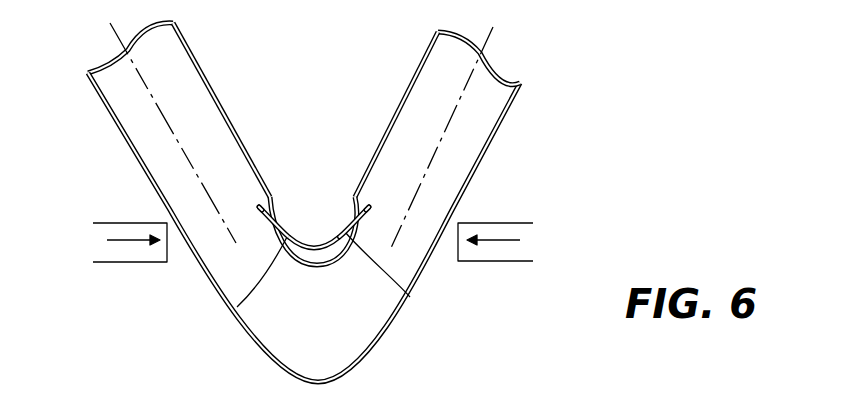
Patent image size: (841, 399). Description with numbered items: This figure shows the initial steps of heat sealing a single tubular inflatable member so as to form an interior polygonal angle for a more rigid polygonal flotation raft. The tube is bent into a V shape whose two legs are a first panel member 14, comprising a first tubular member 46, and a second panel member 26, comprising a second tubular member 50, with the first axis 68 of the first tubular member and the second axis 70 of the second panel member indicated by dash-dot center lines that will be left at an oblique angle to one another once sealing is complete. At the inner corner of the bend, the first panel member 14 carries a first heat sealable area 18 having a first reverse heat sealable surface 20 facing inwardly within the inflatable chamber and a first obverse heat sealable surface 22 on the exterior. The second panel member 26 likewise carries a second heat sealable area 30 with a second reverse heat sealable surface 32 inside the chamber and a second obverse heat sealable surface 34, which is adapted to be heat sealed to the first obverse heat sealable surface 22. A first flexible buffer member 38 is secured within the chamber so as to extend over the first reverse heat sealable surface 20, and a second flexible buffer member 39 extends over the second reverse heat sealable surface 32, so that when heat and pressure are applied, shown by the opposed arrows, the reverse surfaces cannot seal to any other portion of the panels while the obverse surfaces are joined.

The first panel member 14 is at (417, 92).
The first heat sealable area 18 is at (352, 205).
The first reverse heat sealable surface 20 is at (410, 297).
The first obverse heat sealable surface 22 is at (330, 234).
The second panel member 26 is at (205, 78).
The second heat sealable area 30 is at (280, 217).
The second reverse heat sealable surface 32 is at (237, 307).
The second obverse heat sealable surface 34 is at (291, 222).
The first flexible buffer member 38 is at (356, 190).
The second flexible buffer member 39 is at (266, 191).
The first tubular member 46 is at (486, 150).
The second tubular member 50 is at (184, 42).
The first axis 68 is at (488, 44).
The second axis 70 is at (113, 36).